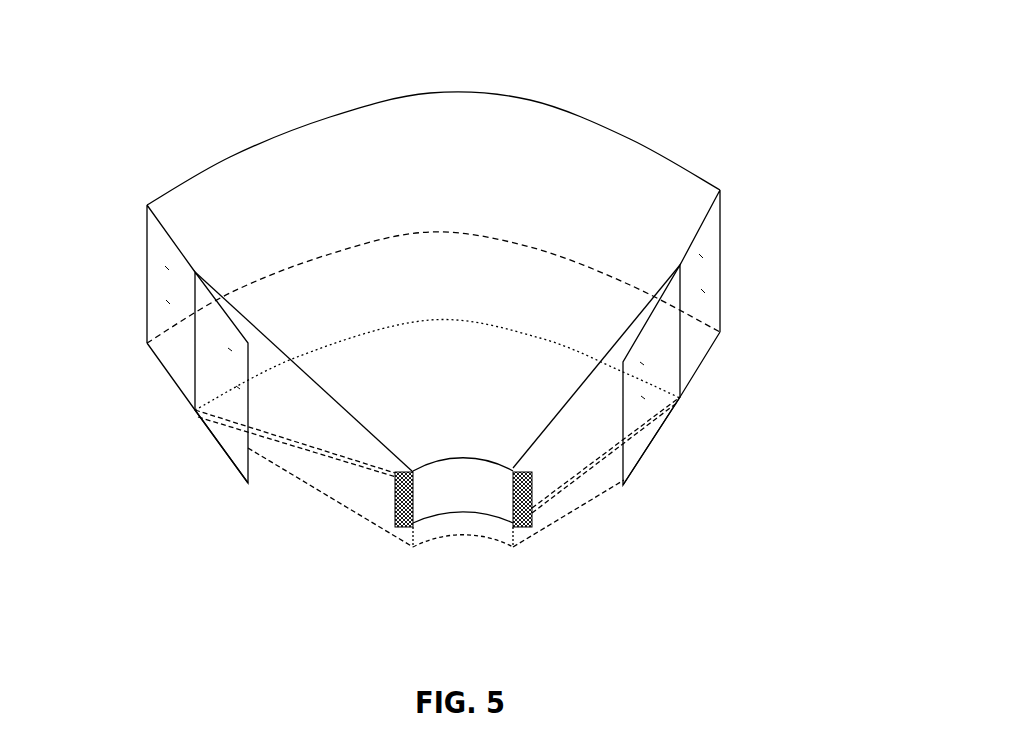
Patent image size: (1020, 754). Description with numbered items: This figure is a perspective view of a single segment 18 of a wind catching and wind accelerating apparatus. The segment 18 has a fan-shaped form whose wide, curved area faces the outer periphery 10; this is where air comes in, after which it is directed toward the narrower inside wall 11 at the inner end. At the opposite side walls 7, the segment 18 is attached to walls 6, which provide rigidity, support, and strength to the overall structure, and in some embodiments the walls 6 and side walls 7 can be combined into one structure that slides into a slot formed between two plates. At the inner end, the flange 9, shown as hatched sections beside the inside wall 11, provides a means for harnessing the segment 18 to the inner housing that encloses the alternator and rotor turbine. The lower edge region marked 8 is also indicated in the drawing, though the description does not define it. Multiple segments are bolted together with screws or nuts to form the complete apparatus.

The segment 18 is at (210, 138).
The outer periphery 10 is at (448, 168).
The walls 6 is at (218, 457).
The side walls 7 is at (345, 457).
The bottom edge 8 is at (350, 508).
The flange 9 is at (508, 505).
The inside wall 11 is at (467, 488).